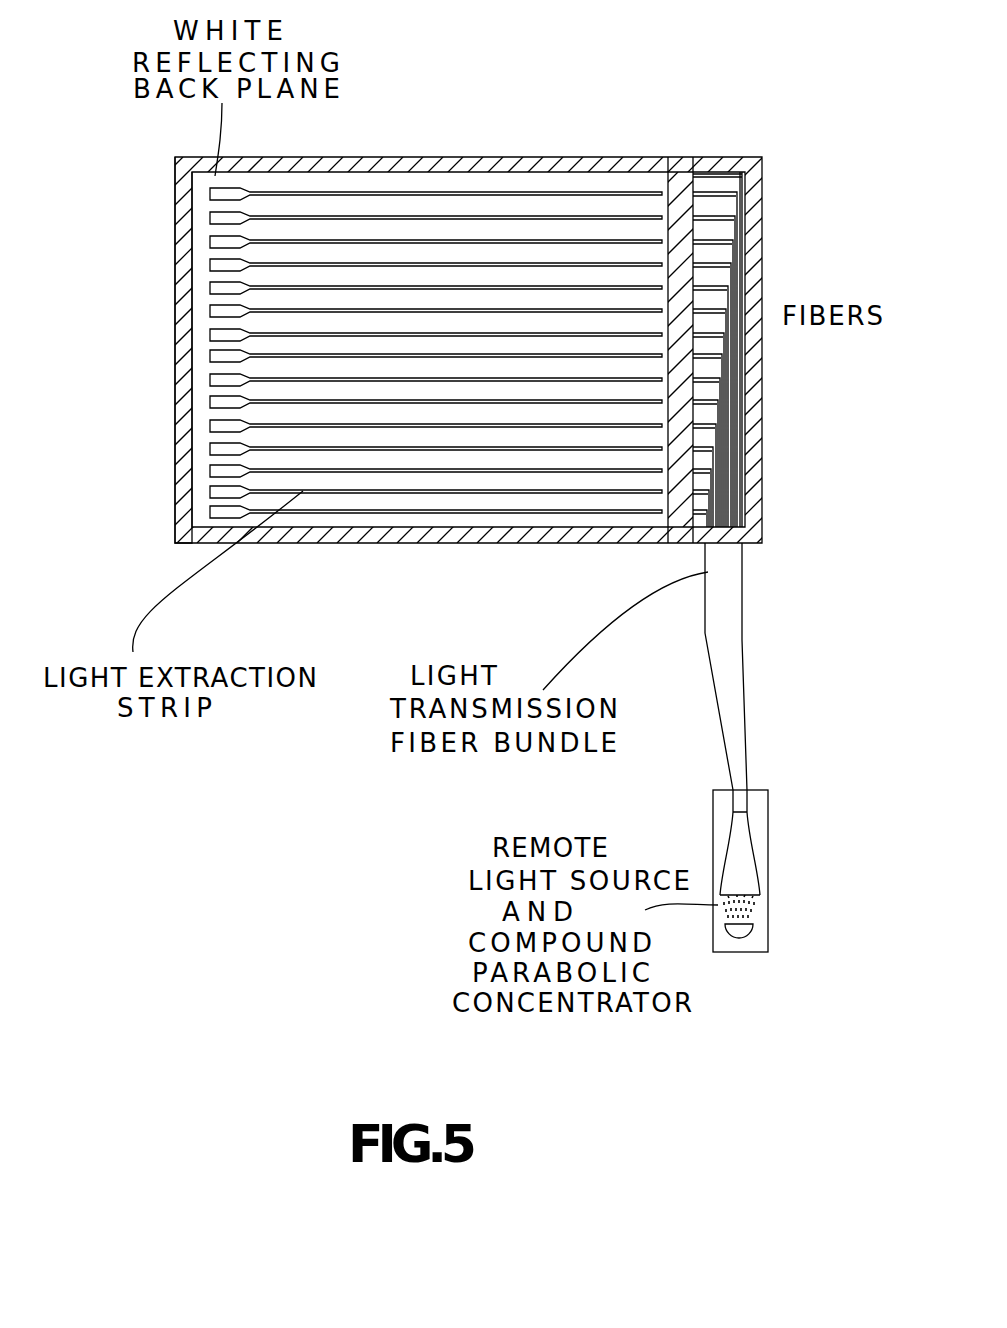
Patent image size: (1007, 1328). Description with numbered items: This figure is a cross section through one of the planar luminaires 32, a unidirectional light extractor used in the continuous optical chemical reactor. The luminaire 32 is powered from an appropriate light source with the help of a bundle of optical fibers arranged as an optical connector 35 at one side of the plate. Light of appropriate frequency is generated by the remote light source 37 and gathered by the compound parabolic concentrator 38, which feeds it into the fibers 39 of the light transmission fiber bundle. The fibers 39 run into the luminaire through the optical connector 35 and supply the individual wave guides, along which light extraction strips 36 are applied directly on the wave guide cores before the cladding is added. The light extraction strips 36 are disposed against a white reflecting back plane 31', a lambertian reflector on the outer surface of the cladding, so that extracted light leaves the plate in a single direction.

The planar luminaire 32 is at (468, 136).
The white reflecting back plane 31' is at (120, 350).
The optical connector 35 is at (682, 207).
The light extraction strips 36 is at (207, 403).
The fibers 39 is at (743, 380).
The compound parabolic concentrator 38 is at (745, 855).
The light source 37 is at (745, 932).